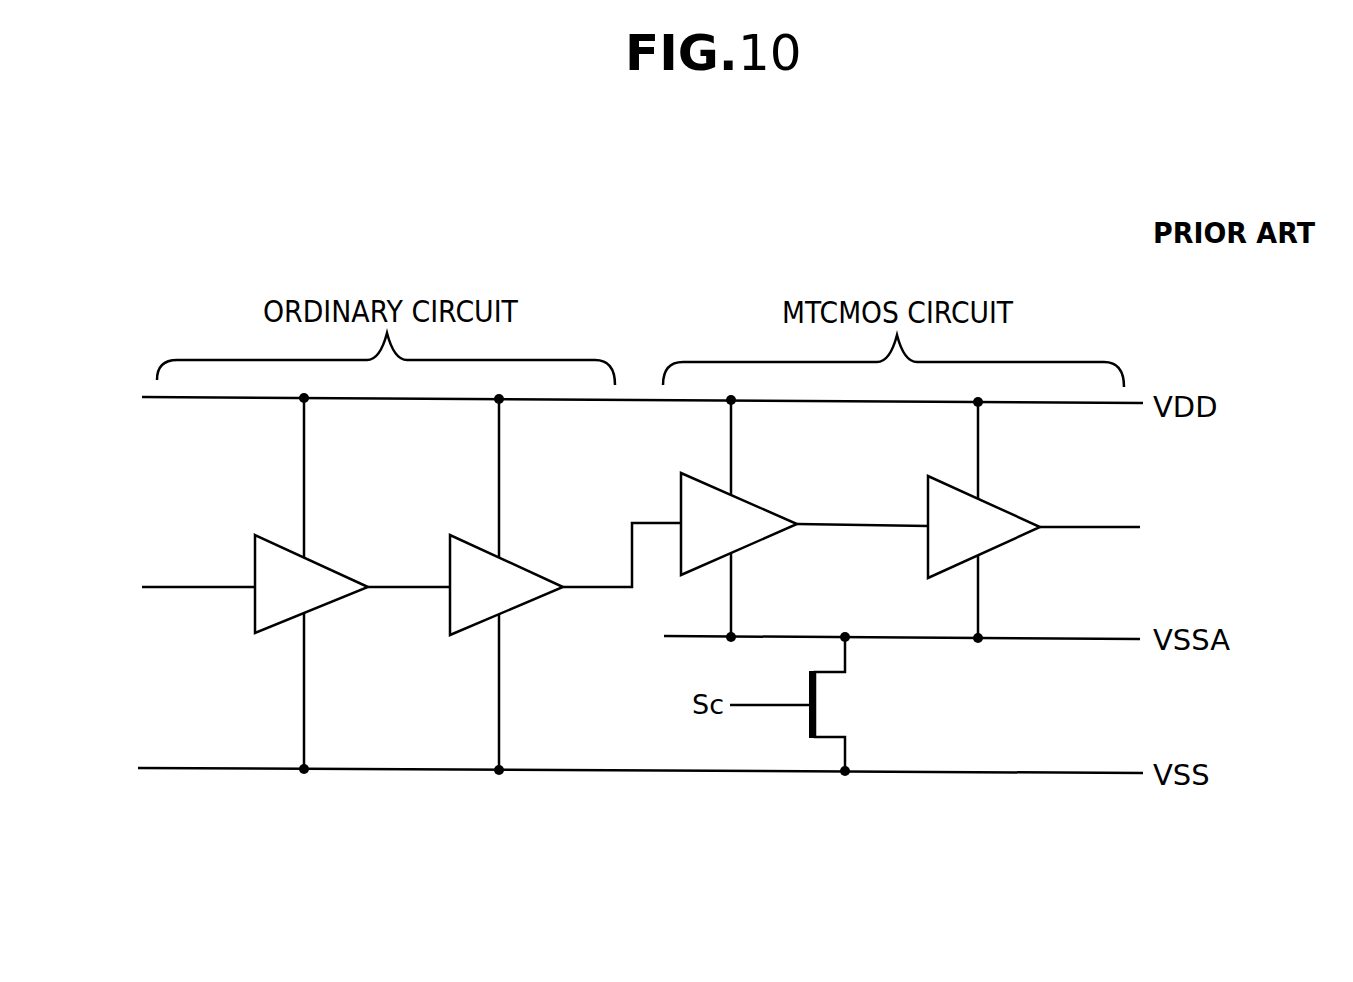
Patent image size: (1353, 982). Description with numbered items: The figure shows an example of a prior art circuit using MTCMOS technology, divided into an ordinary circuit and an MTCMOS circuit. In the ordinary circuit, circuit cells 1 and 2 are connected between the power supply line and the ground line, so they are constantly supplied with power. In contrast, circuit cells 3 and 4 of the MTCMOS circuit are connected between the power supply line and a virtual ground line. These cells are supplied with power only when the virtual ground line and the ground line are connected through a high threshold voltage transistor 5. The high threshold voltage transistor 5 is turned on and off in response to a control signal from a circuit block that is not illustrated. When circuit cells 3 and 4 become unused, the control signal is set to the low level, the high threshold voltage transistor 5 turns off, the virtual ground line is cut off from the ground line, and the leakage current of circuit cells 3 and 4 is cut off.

The circuit cell 1 is at (318, 561).
The circuit cell 2 is at (518, 561).
The circuit cell 3 is at (762, 503).
The circuit cell 4 is at (1010, 510).
The high threshold voltage transistor 5 is at (807, 686).